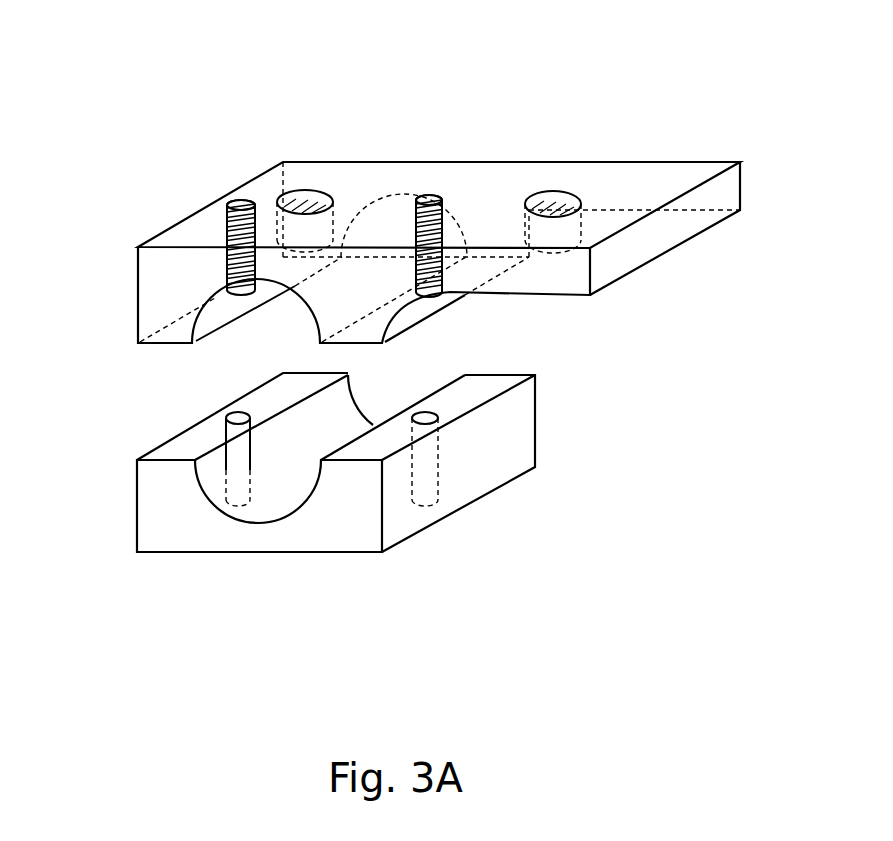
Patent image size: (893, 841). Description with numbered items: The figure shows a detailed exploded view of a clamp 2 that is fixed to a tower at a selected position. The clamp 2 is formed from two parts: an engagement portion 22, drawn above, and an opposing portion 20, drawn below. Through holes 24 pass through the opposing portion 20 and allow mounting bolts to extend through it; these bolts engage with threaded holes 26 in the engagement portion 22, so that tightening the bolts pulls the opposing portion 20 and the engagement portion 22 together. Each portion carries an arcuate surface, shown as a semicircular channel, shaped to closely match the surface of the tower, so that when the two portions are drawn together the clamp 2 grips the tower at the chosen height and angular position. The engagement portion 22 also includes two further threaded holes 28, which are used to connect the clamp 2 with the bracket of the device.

The clamp 2 is at (117, 31).
The opposing portion 20 is at (335, 556).
The engagement portion 22 is at (678, 245).
The through holes 24 is at (228, 476).
The threaded holes 26 is at (228, 272).
The threaded holes 28 is at (535, 193).